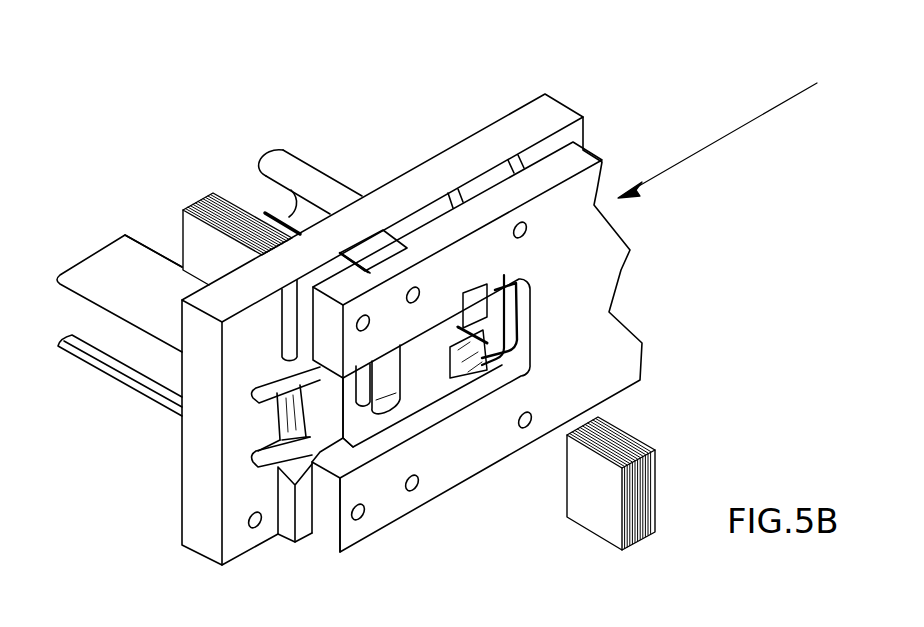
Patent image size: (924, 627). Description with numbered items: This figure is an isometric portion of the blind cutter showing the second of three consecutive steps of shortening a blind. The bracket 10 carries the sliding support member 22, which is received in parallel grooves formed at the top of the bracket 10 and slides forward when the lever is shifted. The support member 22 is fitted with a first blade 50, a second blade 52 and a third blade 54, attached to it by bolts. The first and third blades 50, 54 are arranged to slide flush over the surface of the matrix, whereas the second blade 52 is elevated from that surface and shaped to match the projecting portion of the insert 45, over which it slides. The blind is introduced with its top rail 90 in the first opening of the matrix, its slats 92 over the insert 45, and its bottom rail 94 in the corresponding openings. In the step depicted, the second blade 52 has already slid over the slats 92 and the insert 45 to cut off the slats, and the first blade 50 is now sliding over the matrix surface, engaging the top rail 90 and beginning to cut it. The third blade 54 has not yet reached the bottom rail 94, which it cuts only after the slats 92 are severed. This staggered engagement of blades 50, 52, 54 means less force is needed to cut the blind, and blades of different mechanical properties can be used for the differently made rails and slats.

The bracket 10 is at (510, 137).
The sliding support member 22 is at (570, 167).
The insert 45 is at (360, 420).
The first blade 50 is at (309, 420).
The second blade 52 is at (388, 395).
The third blade 54 is at (483, 370).
The top rail 90 is at (110, 263).
The slats 92 is at (213, 190).
The bottom rail 94 is at (303, 170).